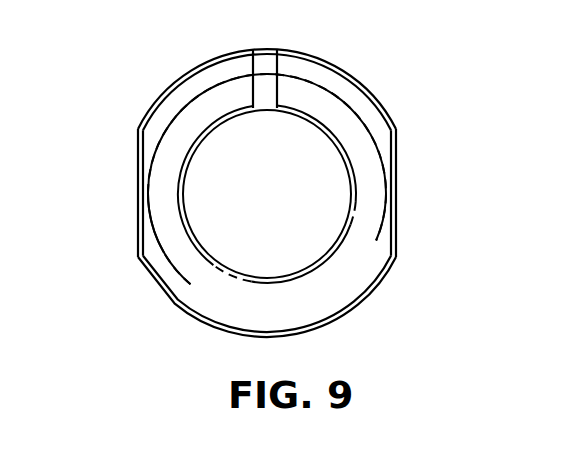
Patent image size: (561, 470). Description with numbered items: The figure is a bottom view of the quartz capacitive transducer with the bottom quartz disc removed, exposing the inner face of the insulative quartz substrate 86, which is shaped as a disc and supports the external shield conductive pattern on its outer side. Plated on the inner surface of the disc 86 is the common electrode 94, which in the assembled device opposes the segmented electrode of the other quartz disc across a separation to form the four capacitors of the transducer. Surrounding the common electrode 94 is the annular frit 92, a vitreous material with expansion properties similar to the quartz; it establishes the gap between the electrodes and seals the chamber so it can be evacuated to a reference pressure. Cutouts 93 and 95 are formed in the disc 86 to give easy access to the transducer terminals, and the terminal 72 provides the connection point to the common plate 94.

The terminal 72 is at (266, 53).
The insulative quartz substrate 86 is at (389, 112).
The annular frit 92 is at (324, 102).
The cutout 93 is at (397, 167).
The common electrode 94 is at (318, 228).
The cutout 95 is at (138, 200).